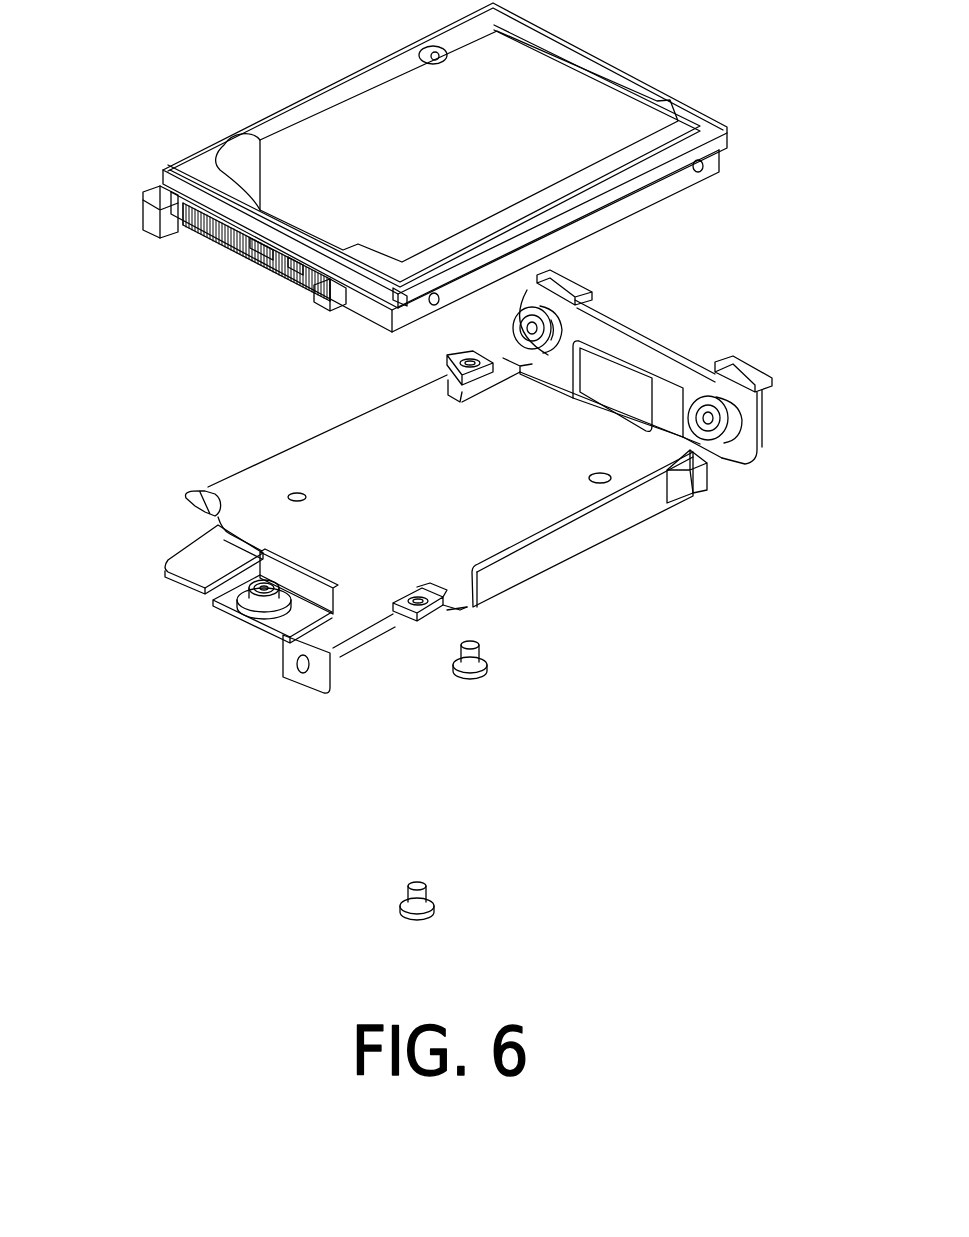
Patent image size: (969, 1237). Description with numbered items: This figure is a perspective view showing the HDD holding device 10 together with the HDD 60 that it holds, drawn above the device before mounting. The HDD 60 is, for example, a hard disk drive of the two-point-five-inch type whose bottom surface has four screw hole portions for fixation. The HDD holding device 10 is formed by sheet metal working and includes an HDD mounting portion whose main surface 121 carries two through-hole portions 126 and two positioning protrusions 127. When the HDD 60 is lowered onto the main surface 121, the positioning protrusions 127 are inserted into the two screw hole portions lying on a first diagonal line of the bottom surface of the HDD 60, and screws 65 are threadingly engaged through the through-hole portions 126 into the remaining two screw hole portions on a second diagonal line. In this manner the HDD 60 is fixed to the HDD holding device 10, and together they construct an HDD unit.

The HDD 60 is at (352, 116).
The HDD holding device 10 is at (597, 556).
The main surface 121 is at (336, 444).
The through-hole portions 126 is at (457, 357).
The positioning protrusions 127 is at (186, 497).
The screws 65 is at (490, 672).